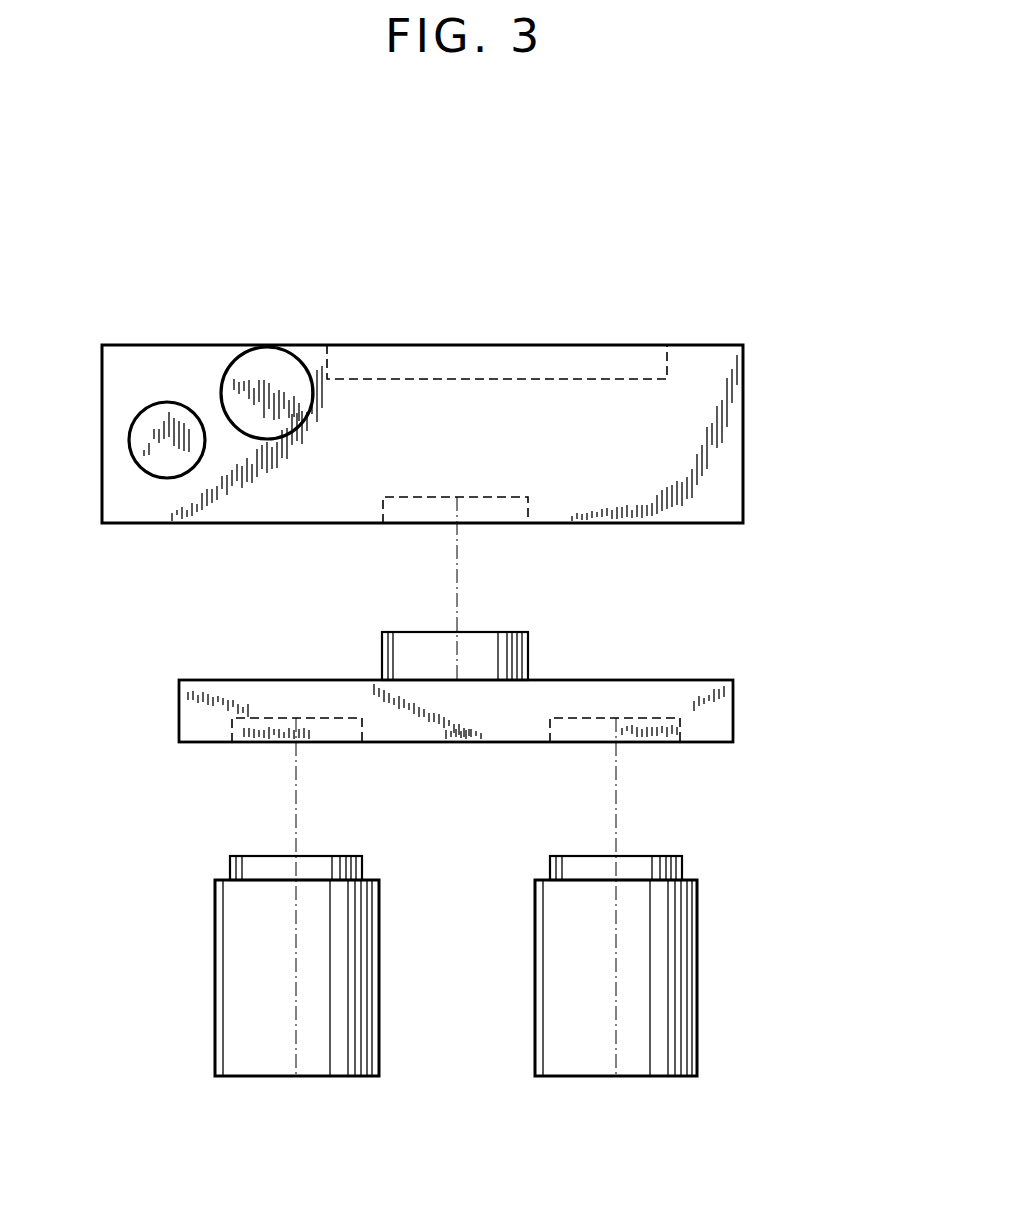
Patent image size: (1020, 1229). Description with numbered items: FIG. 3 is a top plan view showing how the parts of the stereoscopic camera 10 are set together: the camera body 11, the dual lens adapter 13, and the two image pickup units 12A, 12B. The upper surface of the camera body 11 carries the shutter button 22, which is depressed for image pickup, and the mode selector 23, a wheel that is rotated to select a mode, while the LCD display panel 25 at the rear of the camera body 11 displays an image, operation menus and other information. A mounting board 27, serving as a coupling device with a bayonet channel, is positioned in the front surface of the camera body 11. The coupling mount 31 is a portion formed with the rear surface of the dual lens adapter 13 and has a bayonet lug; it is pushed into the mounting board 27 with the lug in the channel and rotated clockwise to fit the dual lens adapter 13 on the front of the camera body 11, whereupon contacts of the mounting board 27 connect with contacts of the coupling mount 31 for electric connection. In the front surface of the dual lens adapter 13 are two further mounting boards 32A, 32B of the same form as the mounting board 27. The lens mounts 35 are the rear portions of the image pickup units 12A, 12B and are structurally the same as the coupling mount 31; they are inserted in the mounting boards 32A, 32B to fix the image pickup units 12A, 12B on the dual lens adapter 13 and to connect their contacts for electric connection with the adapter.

The stereoscopic camera 10 is at (556, 228).
The camera body 11 is at (167, 325).
The dual lens adapter 13 is at (733, 708).
The image pickup unit 12A is at (190, 993).
The image pickup unit 12B is at (722, 993).
The shutter button 22 is at (172, 462).
The mode selector 23 is at (267, 372).
The LCD display panel 25 is at (600, 380).
The mounting board 27 is at (416, 497).
The coupling mount 31 is at (487, 632).
The mounting board 32A is at (286, 718).
The mounting board 32B is at (638, 718).
The lens mount 35 is at (337, 856).